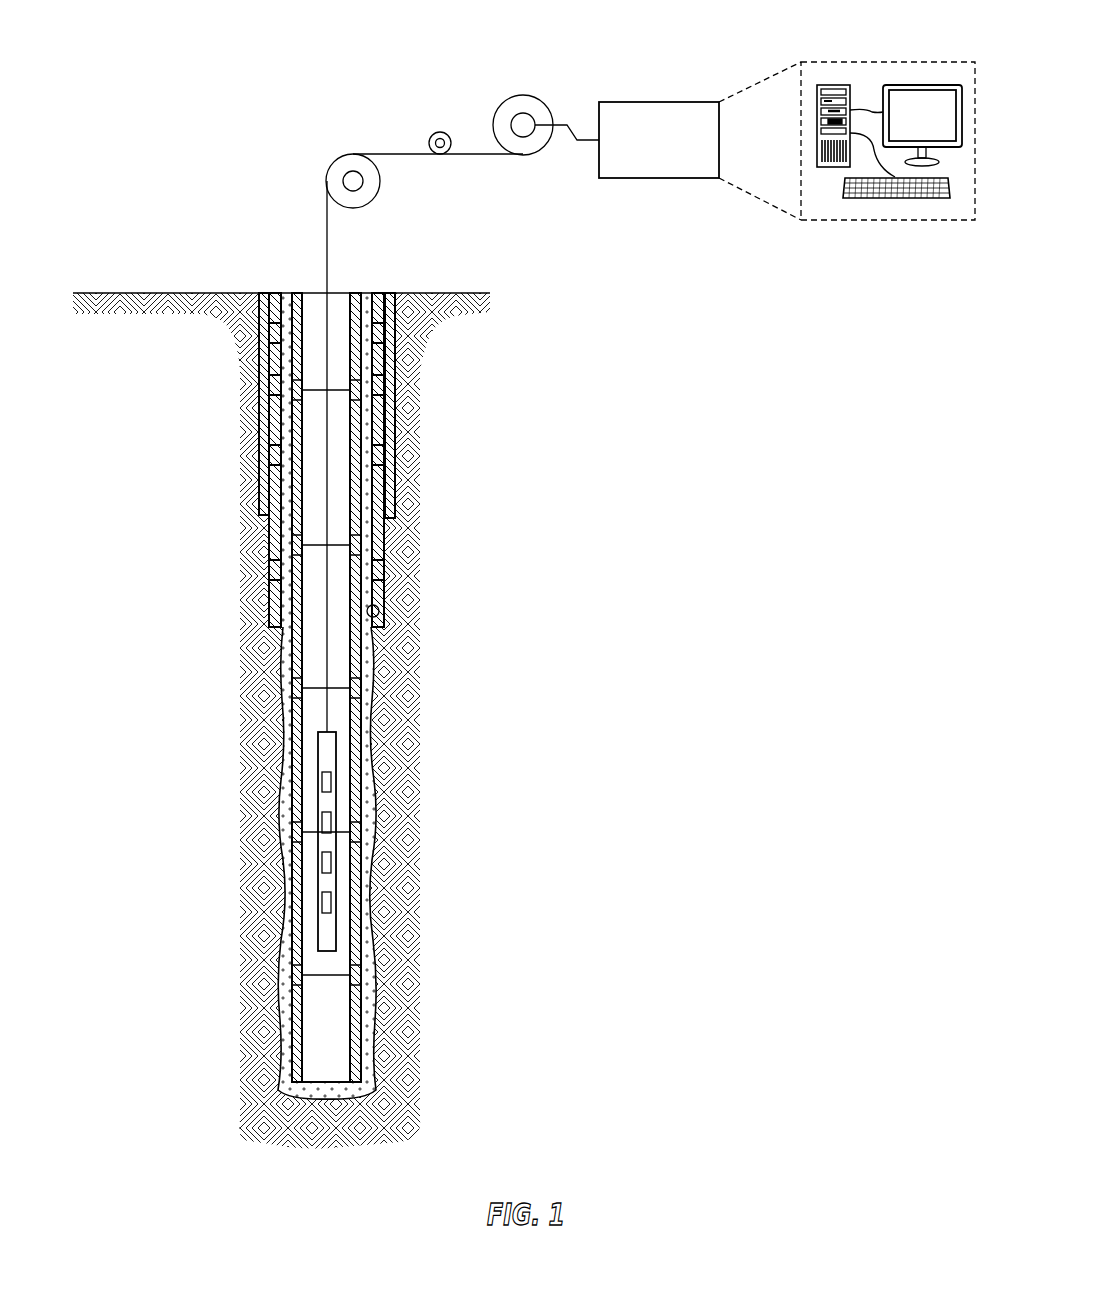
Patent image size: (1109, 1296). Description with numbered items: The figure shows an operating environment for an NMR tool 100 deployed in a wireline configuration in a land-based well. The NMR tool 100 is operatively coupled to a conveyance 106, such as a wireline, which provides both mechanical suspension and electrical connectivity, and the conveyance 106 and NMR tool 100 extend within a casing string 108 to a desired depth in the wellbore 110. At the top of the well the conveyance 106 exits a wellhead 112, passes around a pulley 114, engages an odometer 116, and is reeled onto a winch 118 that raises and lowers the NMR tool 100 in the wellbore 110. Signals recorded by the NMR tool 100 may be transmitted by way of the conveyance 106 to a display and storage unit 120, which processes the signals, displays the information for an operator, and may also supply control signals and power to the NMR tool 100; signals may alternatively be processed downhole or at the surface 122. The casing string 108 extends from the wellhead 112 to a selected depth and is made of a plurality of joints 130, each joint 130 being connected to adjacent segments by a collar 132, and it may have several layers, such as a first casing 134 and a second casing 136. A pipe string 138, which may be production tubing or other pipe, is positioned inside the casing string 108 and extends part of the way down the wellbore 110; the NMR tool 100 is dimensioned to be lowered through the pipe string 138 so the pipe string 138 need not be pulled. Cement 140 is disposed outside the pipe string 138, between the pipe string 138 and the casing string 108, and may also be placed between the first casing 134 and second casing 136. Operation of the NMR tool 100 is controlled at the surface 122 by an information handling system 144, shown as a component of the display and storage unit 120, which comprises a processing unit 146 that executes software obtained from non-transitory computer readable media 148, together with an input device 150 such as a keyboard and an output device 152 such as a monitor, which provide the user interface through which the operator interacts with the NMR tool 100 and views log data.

The NMR tool 100 is at (306, 869).
The conveyance 106 is at (328, 253).
The casing string 108 is at (249, 507).
The wellbore 110 is at (379, 611).
The wellhead 112 is at (316, 288).
The pulley 114 is at (328, 169).
The odometer 116 is at (443, 131).
The winch 118 is at (541, 99).
The display and storage unit 120 is at (670, 102).
The surface 122 is at (113, 292).
The joint 130 is at (272, 539).
The collar 132 is at (276, 578).
The first casing 134 is at (380, 544).
The second casing 136 is at (386, 505).
The pipe string 138 is at (364, 1041).
The cement 140 is at (374, 741).
The information handling system 144 is at (870, 62).
The processing unit 146 is at (866, 154).
The non-transitory computer readable media 148 is at (835, 86).
The input device 150 is at (893, 199).
The output device 152 is at (920, 85).